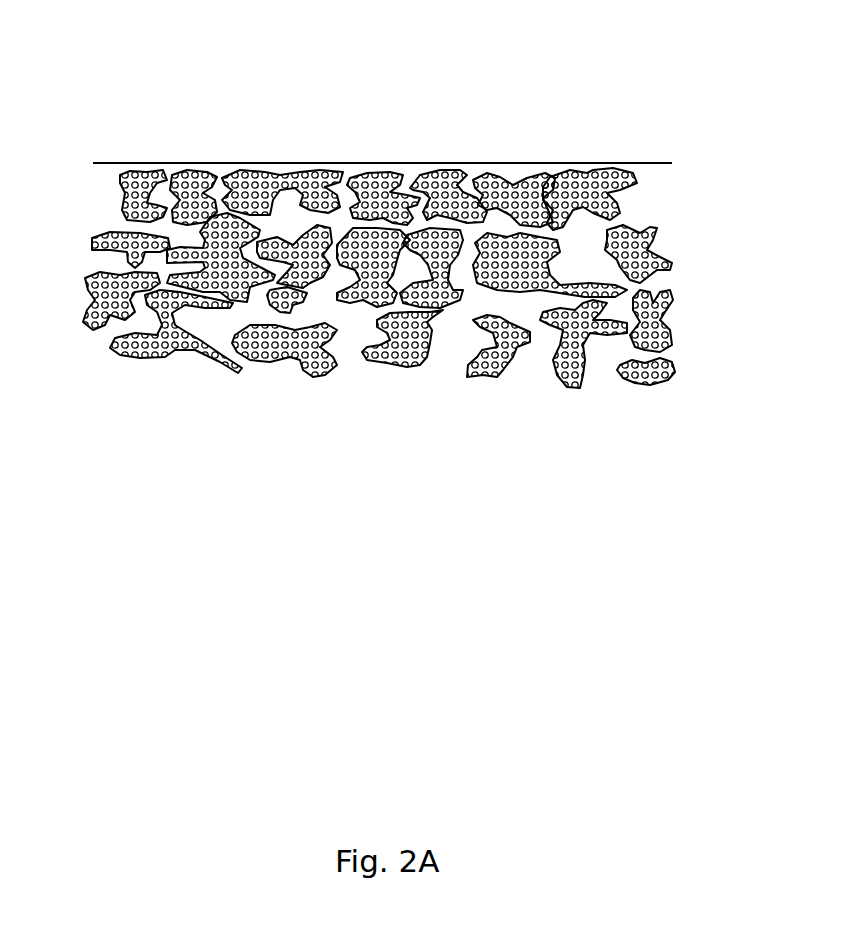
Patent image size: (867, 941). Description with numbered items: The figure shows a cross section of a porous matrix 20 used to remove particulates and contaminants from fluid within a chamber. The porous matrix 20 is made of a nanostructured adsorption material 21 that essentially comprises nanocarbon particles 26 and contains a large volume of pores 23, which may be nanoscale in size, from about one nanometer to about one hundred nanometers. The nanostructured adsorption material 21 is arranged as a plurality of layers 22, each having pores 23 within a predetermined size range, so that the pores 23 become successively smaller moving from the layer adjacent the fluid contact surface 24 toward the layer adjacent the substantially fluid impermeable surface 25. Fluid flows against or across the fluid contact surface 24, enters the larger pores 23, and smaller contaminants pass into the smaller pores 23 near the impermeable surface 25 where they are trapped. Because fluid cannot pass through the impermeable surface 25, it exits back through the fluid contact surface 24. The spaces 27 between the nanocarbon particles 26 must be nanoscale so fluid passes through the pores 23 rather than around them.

The porous matrix 20 is at (632, 70).
The nanostructured adsorption material 21 is at (470, 377).
The layers 22 is at (710, 163).
The pores 23 is at (366, 284).
The fluid contact surface 24 is at (225, 372).
The substantially fluid impermeable surface 25 is at (240, 163).
The nanocarbon particles 26 is at (355, 350).
The spaces 27 is at (140, 356).